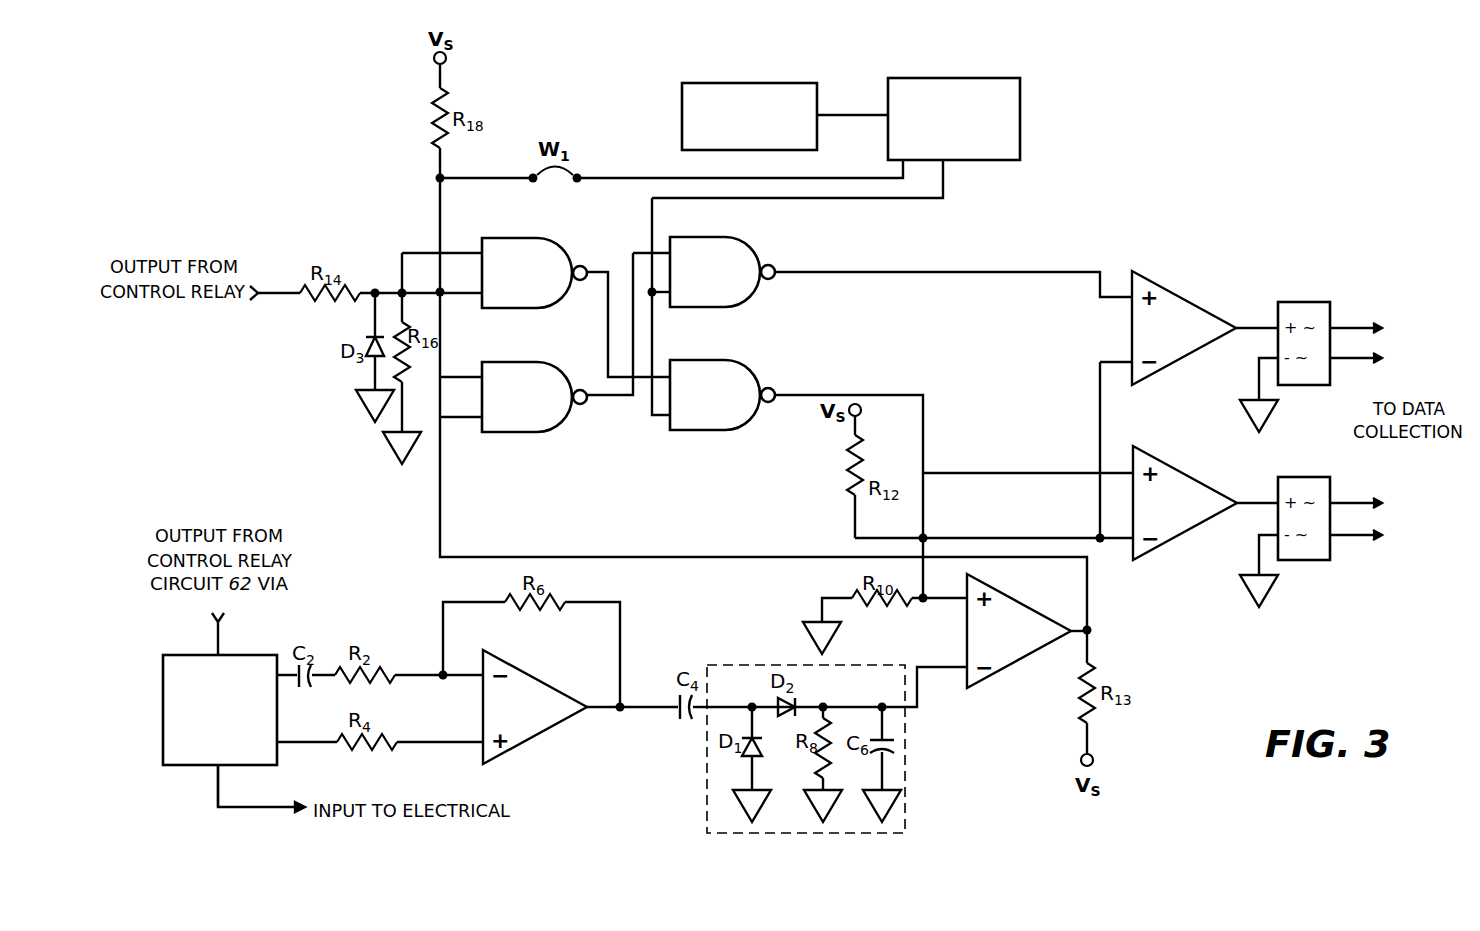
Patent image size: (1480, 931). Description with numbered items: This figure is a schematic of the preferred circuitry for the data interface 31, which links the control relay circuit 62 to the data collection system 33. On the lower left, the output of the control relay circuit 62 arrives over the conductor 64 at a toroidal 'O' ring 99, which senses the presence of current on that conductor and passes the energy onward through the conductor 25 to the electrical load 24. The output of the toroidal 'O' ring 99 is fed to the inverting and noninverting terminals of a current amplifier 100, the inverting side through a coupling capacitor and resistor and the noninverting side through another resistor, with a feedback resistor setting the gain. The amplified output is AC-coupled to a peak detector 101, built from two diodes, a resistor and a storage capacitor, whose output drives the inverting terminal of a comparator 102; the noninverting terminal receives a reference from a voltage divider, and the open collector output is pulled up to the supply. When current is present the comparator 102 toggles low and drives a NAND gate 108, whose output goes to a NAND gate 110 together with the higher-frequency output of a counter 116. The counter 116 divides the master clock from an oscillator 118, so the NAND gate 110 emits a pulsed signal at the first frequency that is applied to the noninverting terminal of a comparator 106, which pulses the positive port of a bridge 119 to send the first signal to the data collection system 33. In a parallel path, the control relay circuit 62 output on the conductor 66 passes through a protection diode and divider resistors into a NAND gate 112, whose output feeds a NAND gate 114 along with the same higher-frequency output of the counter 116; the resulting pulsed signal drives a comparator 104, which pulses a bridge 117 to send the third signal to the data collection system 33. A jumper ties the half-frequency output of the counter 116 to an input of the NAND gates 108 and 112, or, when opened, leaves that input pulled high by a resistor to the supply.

The data interface 31 is at (1137, 37).
The oscillator 118 is at (740, 83).
The counter 116 is at (945, 78).
The NAND gate 112 is at (503, 308).
The NAND gate 108 is at (503, 432).
The NAND gate 110 is at (697, 307).
The NAND gate 114 is at (697, 430).
The comparator 106 is at (1183, 358).
The comparator 104 is at (1183, 533).
The comparator 102 is at (1017, 660).
The current amplifier 100 is at (535, 735).
The bridge 119 is at (1305, 302).
The bridge 117 is at (1305, 477).
The toroidal 'O' ring 99 is at (163, 705).
The conductor 25 is at (218, 785).
The peak detector 101 is at (905, 757).
The control relay circuit 62 is at (175, 315).
The conductor 66 is at (190, 336).
The conductor 64 is at (236, 606).
The electrical load 24 is at (431, 833).
The data collection system 33 is at (1425, 455).